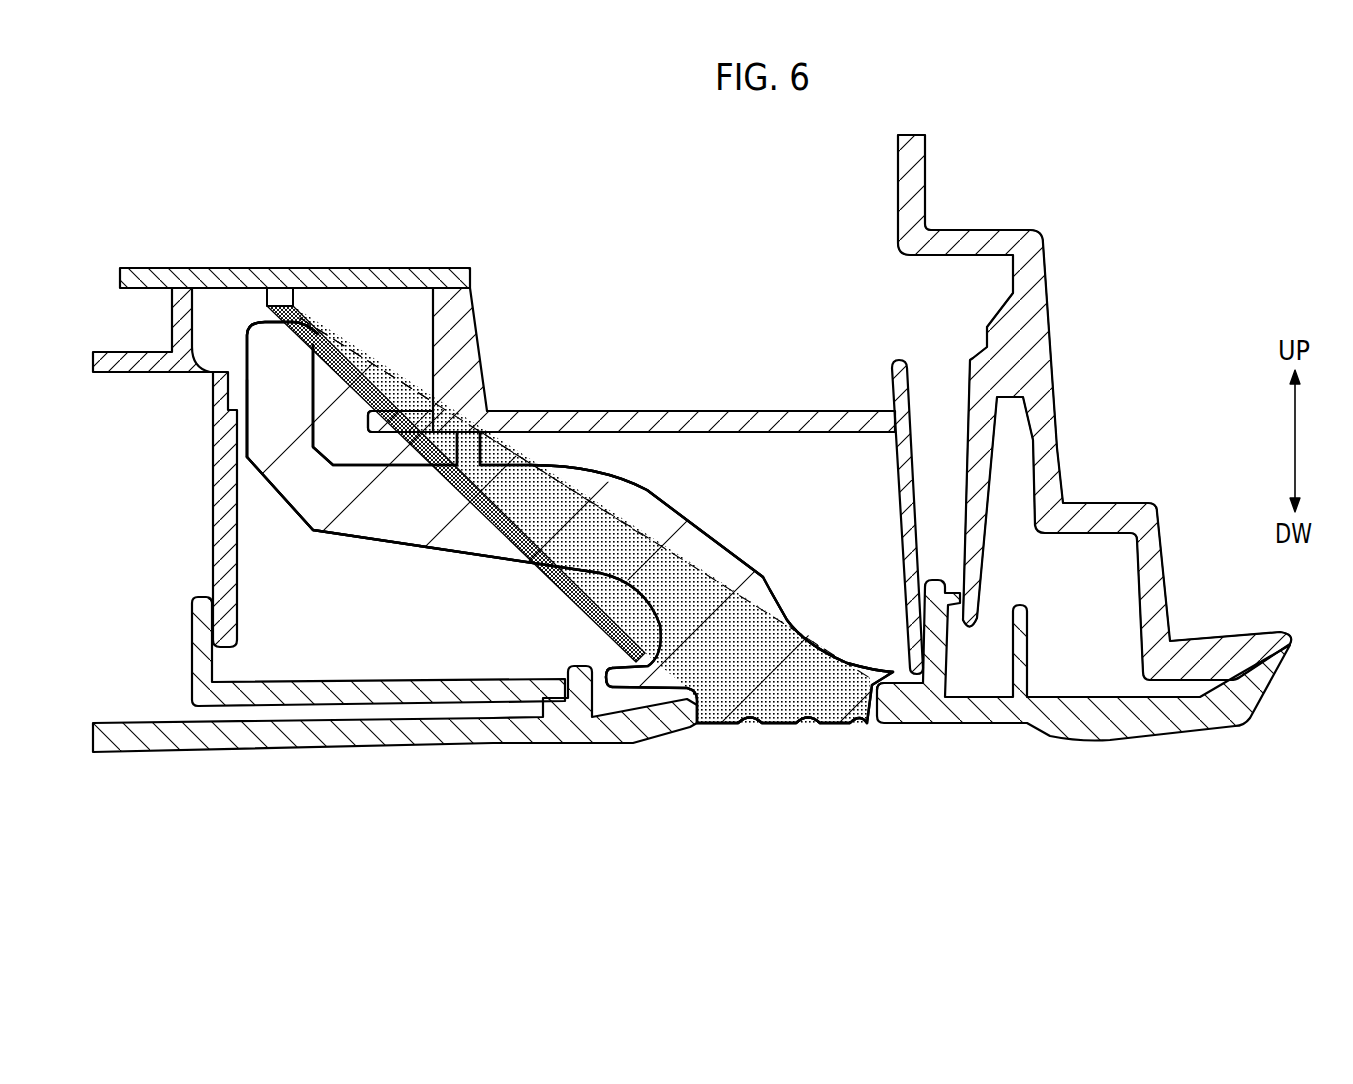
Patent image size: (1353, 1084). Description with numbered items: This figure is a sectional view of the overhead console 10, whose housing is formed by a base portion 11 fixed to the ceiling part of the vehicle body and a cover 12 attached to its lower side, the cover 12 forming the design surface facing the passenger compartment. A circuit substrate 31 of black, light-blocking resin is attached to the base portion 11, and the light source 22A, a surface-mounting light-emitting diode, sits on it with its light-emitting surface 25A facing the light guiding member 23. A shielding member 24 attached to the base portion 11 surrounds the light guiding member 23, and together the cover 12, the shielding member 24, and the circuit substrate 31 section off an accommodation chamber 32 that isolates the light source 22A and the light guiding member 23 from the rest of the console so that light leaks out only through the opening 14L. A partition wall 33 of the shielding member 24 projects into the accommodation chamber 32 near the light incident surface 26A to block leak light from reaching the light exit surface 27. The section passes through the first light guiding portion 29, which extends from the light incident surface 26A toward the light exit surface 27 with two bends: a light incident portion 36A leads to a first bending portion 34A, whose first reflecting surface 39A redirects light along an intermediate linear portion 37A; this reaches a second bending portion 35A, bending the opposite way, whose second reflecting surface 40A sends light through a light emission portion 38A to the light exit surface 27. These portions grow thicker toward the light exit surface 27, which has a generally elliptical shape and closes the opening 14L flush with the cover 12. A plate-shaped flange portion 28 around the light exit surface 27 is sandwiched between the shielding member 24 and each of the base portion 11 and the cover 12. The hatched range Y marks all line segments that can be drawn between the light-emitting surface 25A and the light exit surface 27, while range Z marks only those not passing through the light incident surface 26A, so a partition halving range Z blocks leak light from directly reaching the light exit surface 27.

The overhead console 10 is at (1122, 312).
The base portion 11 is at (1037, 383).
The cover 12 is at (535, 735).
The opening 14L is at (857, 727).
The light source 22A is at (283, 297).
The light guiding member 23 is at (853, 542).
The shielding member 24 is at (223, 475).
The light-emitting surface 25A is at (293, 325).
The light incident surface 26A is at (282, 326).
The light exit surface 27 is at (783, 728).
The flange portion 28 is at (621, 688).
The first light guiding portion 29 is at (570, 522).
The circuit substrate 31 is at (163, 268).
The accommodation chamber 32 is at (373, 623).
The partition wall 33 is at (380, 421).
The first bending portion 34A is at (317, 483).
The second bending portion 35A is at (673, 553).
The light incident portion 36A is at (273, 392).
The intermediate linear portion 37A is at (477, 528).
The light emission portion 38A is at (780, 643).
The first reflecting surface 39A is at (280, 497).
The second reflecting surface 40A is at (708, 535).
The range Y is at (330, 358).
The range Z is at (522, 505).